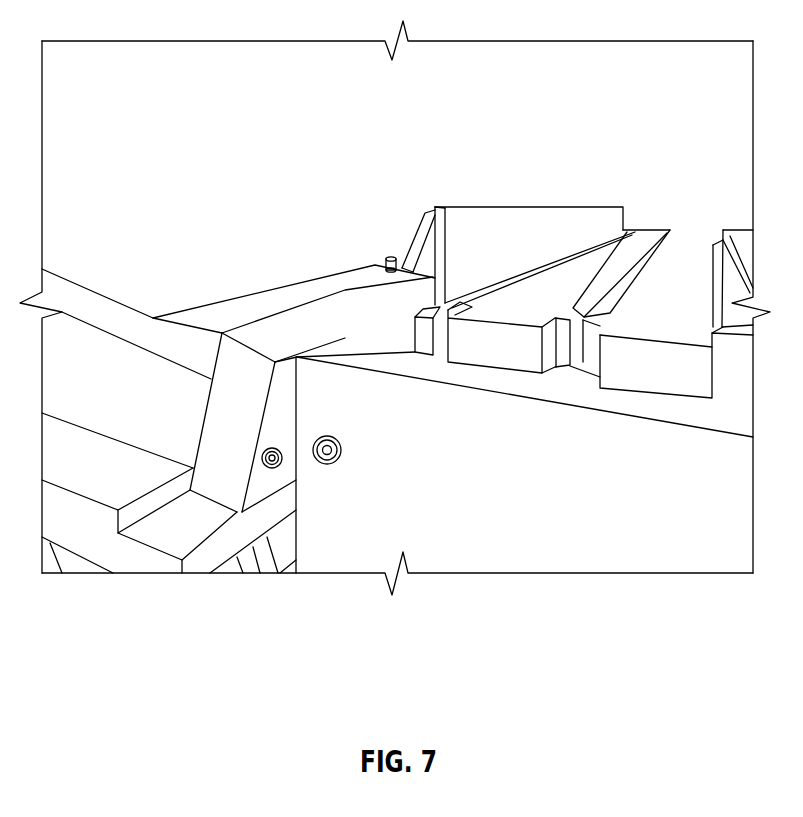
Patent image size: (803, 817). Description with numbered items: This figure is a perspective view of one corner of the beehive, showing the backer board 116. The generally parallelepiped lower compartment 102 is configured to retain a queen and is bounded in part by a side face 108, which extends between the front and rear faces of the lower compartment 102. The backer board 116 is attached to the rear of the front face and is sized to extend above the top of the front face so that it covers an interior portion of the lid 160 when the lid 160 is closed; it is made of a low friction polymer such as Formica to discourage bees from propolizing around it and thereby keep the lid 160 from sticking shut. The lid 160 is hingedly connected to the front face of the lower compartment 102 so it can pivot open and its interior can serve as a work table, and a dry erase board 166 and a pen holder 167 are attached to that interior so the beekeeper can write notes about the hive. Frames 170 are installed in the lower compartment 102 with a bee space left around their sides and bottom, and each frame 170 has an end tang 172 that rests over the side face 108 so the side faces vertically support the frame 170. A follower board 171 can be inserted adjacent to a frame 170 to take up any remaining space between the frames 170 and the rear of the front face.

The lower compartment 102 is at (373, 560).
The side face 108 is at (590, 526).
The backer board 116 is at (535, 205).
The removable lid 160 is at (325, 315).
The dry erase board 166 is at (235, 318).
The pen holder 167 is at (392, 257).
The frame 170 is at (637, 237).
The follower board 171 is at (424, 350).
The end tang 172 is at (507, 358).